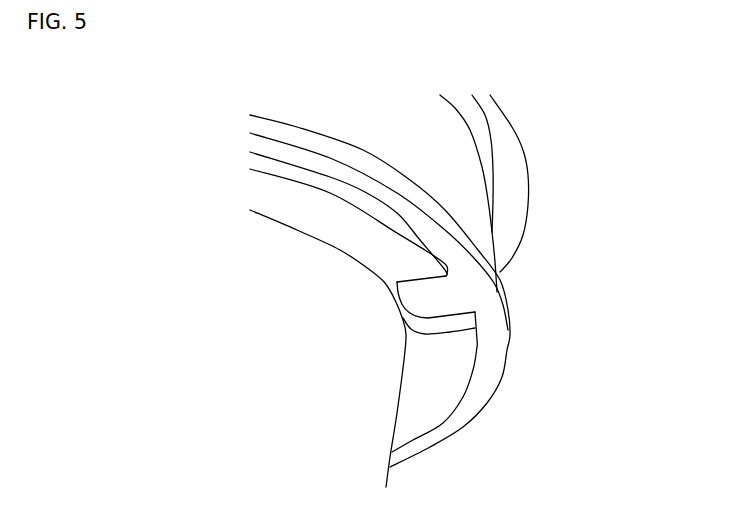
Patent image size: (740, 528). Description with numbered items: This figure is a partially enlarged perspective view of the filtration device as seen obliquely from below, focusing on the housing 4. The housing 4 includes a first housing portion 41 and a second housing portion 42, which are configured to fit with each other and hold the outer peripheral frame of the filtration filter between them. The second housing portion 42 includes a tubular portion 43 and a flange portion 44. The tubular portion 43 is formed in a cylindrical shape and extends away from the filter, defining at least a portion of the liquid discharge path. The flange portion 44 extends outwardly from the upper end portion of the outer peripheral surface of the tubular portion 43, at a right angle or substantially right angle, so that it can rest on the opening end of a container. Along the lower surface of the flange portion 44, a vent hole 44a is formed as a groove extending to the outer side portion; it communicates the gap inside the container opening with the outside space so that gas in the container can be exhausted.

The housing 4 is at (442, 281).
The first housing portion 41 is at (470, 123).
The second housing portion 42 is at (457, 197).
The tubular portion 43 is at (330, 328).
The flange portion 44 is at (499, 343).
The vent hole 44a is at (433, 322).